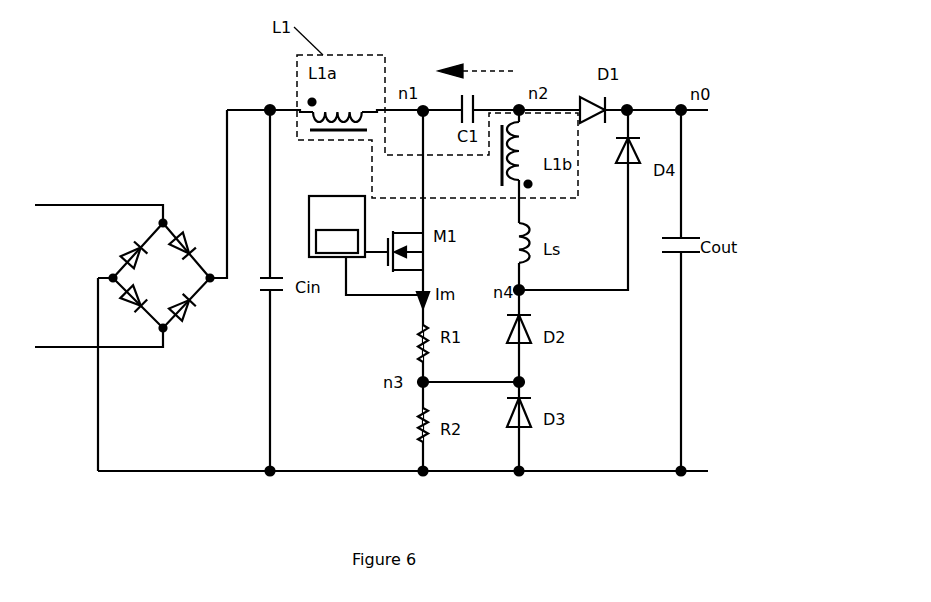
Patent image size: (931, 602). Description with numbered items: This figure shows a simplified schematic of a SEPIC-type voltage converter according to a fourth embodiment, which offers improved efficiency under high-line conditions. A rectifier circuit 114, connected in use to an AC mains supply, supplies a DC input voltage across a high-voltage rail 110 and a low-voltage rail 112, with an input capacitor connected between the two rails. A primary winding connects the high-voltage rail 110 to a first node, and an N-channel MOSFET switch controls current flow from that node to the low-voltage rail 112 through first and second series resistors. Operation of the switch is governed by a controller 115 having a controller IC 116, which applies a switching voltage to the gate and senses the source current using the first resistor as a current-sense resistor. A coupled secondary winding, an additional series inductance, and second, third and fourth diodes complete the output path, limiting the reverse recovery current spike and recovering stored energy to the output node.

The high-voltage rail 110 is at (266, 104).
The low-voltage rail 112 is at (239, 480).
The rectifier circuit 114 is at (186, 218).
The controller 115 is at (353, 224).
The controller IC 116 is at (353, 252).